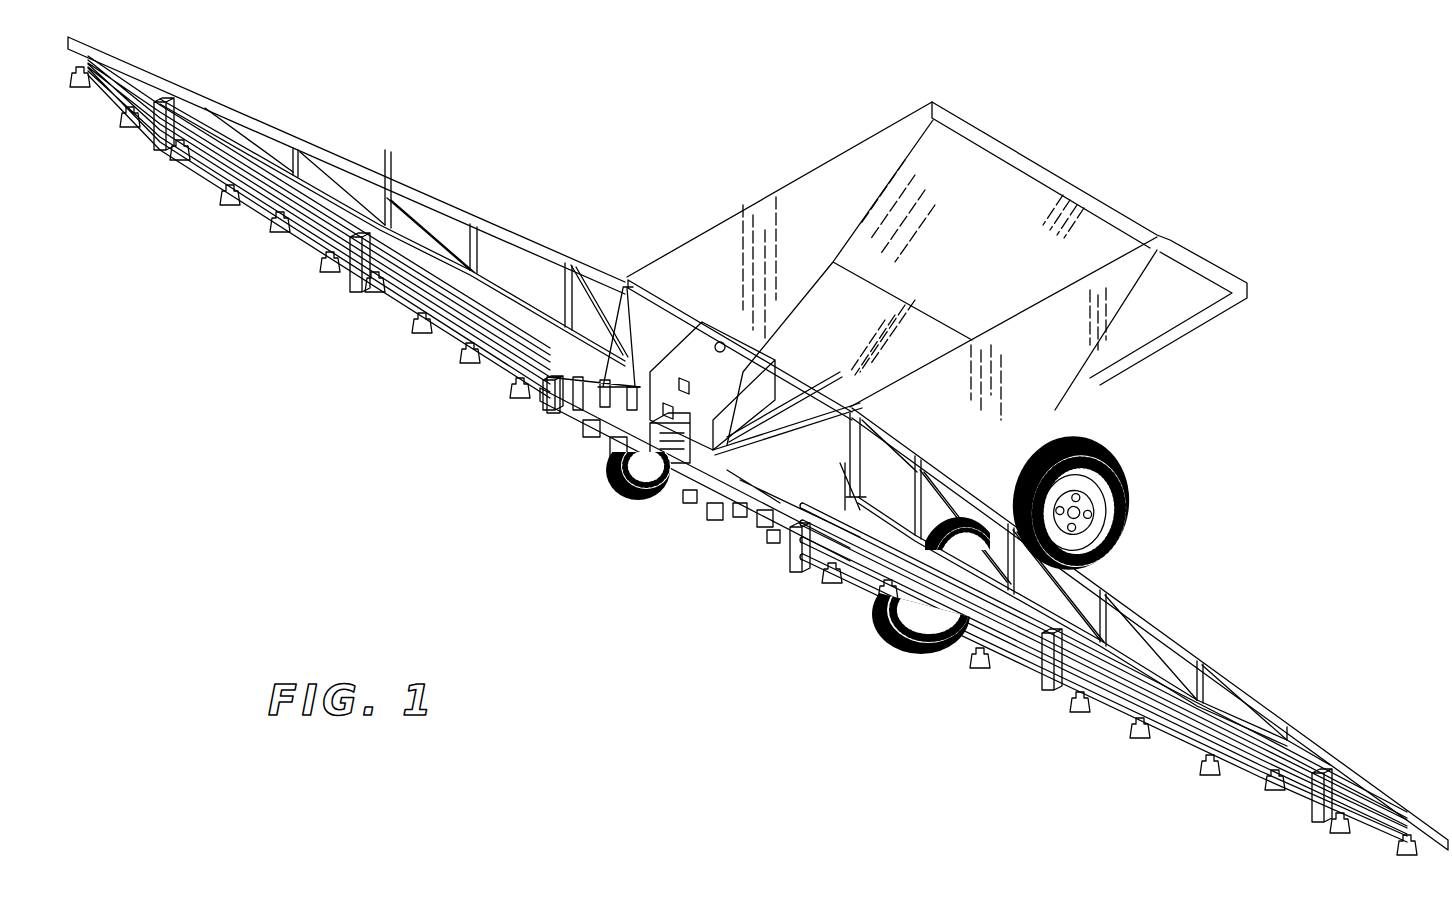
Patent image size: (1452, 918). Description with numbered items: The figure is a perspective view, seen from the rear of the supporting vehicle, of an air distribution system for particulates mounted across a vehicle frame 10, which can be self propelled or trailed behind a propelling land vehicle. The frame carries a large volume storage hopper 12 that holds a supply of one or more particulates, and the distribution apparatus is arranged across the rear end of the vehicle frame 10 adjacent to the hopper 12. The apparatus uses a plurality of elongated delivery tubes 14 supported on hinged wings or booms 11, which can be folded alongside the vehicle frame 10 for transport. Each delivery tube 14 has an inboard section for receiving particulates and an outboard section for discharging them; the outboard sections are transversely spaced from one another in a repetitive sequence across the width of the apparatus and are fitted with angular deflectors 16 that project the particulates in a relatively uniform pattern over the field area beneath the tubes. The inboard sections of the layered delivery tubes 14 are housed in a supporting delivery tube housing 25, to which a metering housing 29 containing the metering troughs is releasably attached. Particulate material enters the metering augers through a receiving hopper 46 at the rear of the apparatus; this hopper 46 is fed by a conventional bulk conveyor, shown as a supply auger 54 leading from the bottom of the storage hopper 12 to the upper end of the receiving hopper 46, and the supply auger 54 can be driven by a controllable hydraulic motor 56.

The vehicle frame 10 is at (758, 449).
The wings or booms 11 is at (383, 182).
The storage hopper 12 is at (945, 424).
The delivery tubes 14 is at (300, 228).
The angular deflectors 16 is at (225, 192).
The delivery tube housing 25 is at (603, 447).
The metering housing 29 is at (623, 430).
The receiving hopper 46 is at (677, 348).
The supply auger 54 is at (745, 352).
The hydraulic motor 56 is at (720, 340).